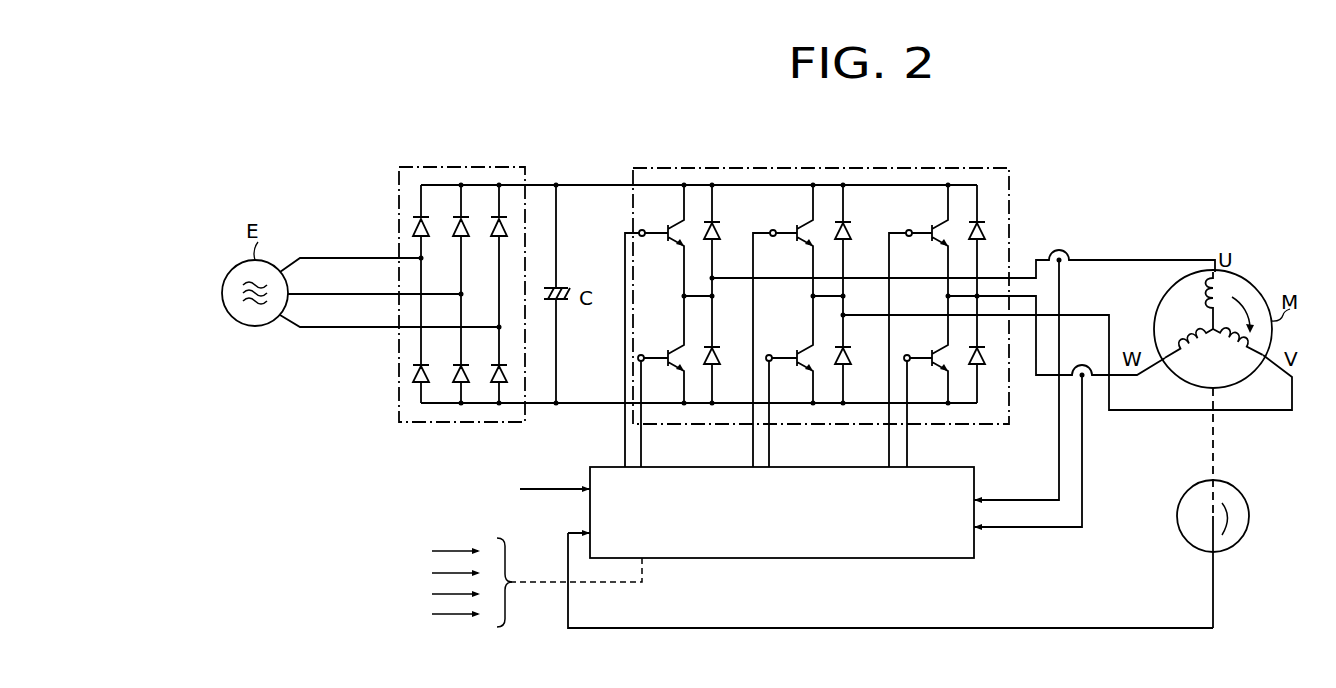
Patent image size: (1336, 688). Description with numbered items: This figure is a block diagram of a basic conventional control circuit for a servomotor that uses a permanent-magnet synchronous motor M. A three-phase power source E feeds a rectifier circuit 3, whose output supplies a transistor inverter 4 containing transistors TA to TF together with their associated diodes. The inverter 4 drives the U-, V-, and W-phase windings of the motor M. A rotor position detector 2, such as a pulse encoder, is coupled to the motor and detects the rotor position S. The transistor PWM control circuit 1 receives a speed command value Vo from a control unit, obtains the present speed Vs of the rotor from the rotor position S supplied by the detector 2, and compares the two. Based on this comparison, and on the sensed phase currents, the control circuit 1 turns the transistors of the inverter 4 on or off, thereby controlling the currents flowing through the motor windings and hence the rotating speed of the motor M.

The transistor PWM control circuit 1 is at (880, 558).
The rotor position detector 2 is at (1249, 521).
The rectifier circuit 3 is at (456, 167).
The transistor inverter 4 is at (802, 168).